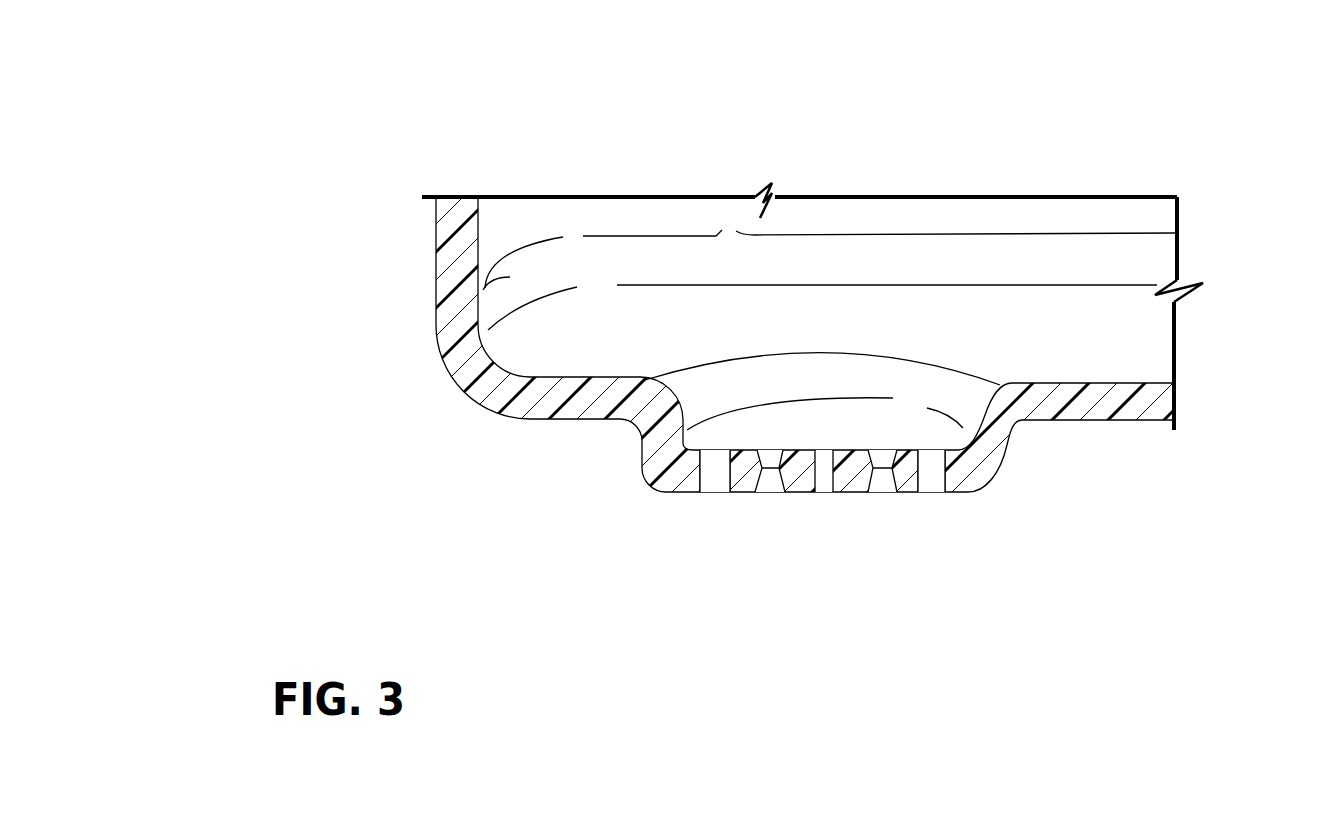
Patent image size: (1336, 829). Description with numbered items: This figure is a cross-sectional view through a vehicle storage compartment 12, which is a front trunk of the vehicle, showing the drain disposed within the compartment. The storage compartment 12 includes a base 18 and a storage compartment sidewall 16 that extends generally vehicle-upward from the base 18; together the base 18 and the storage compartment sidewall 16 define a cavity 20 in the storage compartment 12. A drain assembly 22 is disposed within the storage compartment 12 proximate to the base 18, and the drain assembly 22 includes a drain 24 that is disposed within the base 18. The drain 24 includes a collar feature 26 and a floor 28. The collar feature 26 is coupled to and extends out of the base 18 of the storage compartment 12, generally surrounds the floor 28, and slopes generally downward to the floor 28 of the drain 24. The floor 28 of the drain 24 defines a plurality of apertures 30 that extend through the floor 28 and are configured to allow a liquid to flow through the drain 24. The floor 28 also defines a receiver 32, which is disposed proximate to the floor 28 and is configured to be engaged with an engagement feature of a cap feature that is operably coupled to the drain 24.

The storage compartment 12 is at (720, 165).
The storage compartment sidewall 16 is at (482, 298).
The base 18 is at (1122, 372).
The cavity 20 is at (621, 190).
The drain assembly 22 is at (973, 368).
The drain 24 is at (763, 430).
The collar feature 26 is at (643, 402).
The floor 28 is at (824, 445).
The apertures 30 is at (875, 500).
The receiver 32 is at (709, 497).